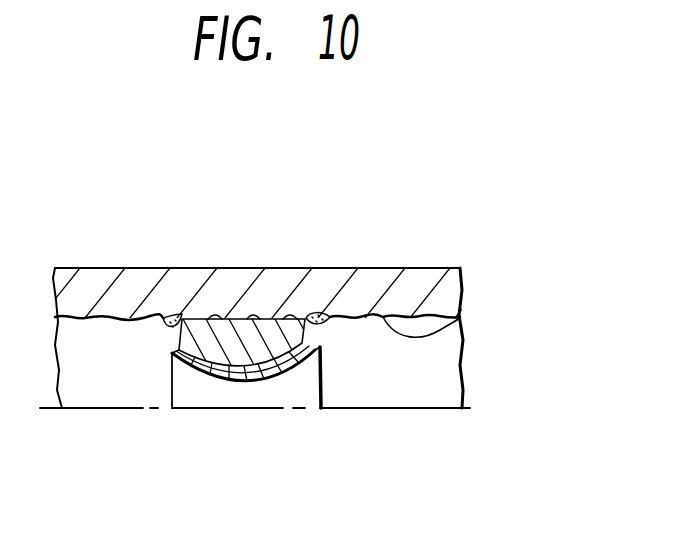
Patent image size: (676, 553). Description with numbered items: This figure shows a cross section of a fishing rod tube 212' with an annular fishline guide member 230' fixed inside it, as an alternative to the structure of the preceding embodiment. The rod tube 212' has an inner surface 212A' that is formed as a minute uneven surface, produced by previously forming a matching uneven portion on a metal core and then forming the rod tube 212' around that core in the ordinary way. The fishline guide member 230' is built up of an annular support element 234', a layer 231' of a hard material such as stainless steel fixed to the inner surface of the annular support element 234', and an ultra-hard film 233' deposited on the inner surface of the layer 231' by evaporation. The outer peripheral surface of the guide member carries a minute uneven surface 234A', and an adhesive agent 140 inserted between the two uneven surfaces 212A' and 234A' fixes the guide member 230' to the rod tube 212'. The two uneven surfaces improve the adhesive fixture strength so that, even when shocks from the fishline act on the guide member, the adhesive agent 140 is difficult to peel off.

The rod tube 212' is at (247, 297).
The inner surface 212A' is at (302, 268).
The adhesive agent 140 is at (316, 315).
The minute uneven surface 234A' is at (204, 242).
The annular fishline guide member 230' is at (257, 434).
The annular support element 234' is at (229, 407).
The layer 231' is at (242, 420).
The ultra-hard film 233' is at (274, 422).